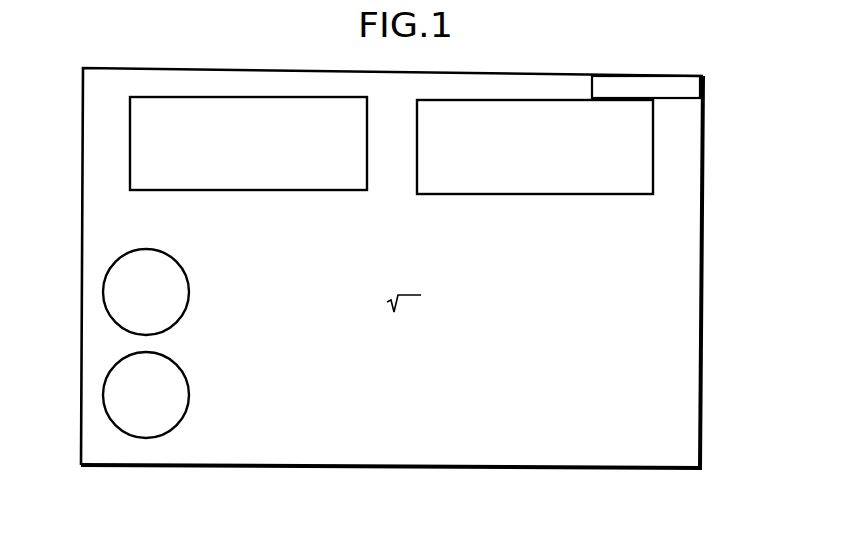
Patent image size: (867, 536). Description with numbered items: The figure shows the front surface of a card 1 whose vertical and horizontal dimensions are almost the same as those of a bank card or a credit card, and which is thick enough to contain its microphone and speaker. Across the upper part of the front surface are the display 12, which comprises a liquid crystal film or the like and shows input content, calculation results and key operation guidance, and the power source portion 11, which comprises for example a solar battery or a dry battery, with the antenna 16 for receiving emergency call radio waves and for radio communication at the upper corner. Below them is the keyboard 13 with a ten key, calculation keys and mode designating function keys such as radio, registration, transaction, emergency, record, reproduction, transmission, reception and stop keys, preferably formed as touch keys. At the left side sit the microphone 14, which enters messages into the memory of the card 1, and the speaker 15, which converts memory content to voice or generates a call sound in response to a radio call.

The card 1 is at (481, 70).
The power source portion 11 is at (571, 100).
The display 12 is at (234, 97).
The keyboard 13 is at (445, 440).
The microphone 14 is at (104, 283).
The speaker 15 is at (104, 386).
The antenna 16 is at (704, 87).